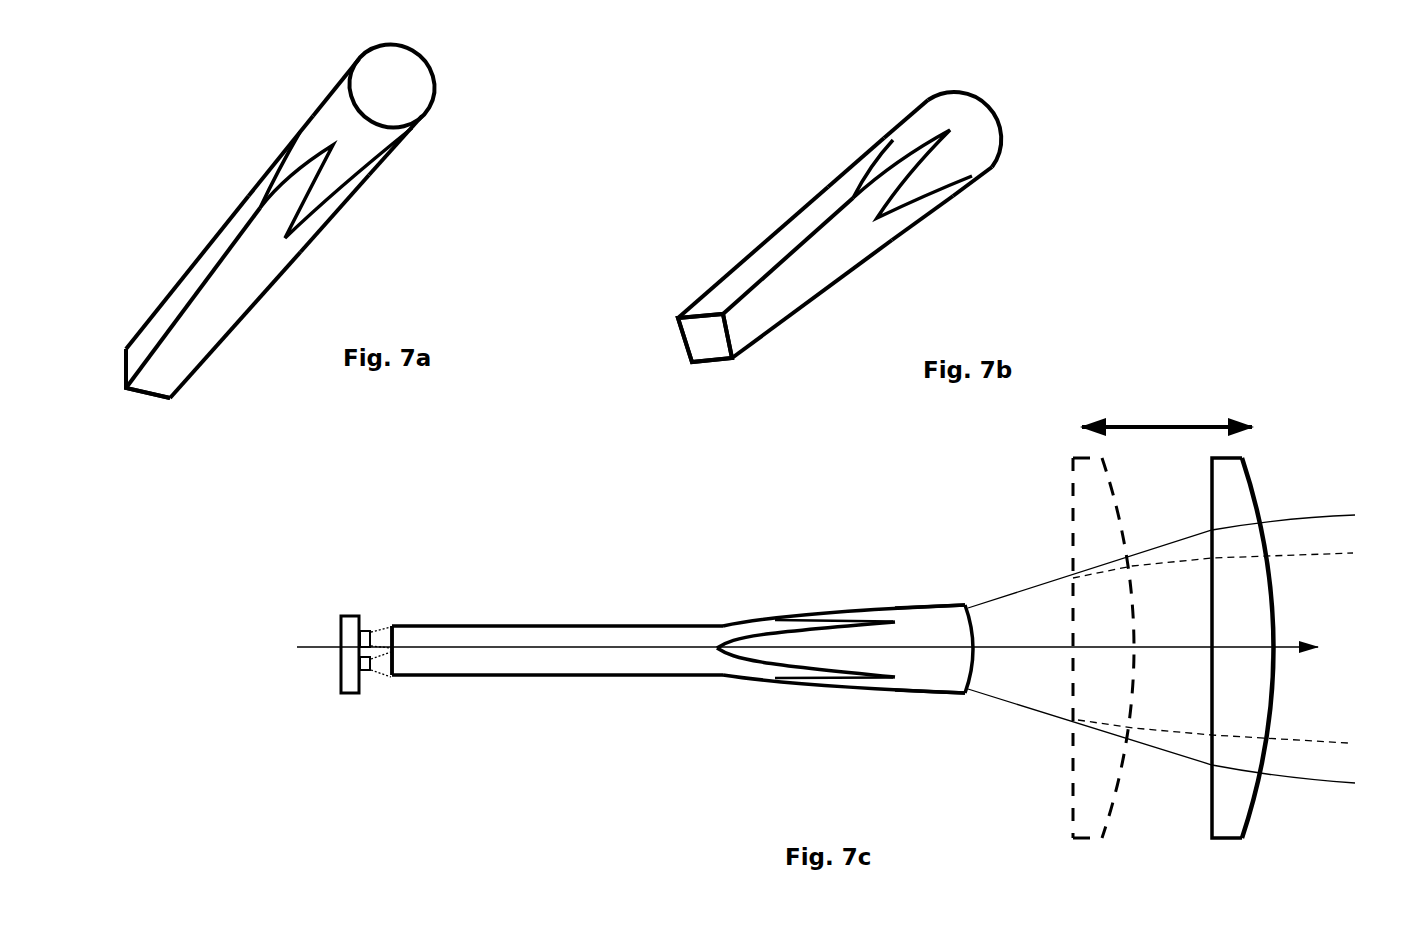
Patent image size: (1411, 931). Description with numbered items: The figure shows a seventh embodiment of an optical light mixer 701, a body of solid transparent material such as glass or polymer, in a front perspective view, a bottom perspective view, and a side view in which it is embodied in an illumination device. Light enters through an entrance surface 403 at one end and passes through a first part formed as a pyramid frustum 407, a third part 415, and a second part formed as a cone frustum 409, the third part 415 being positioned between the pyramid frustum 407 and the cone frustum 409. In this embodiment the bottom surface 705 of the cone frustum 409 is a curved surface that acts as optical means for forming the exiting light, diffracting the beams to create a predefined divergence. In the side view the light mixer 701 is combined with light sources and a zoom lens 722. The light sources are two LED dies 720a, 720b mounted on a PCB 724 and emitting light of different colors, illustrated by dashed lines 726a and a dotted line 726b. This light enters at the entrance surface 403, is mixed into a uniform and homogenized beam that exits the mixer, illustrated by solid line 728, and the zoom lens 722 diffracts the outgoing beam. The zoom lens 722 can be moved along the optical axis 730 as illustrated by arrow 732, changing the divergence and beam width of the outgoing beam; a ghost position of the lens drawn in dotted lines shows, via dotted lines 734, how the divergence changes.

In FIG. 7A, the optical light mixer 701 is at (755, 180).
In FIG. 7B, the optical light mixer 701 is at (755, 180).
In FIG. 7C, the optical light mixer 701 is at (601, 776).
In FIG. 7A, the entrance surface 403 is at (153, 402).
In FIG. 7B, the entrance surface 403 is at (702, 348).
In FIG. 7C, the entrance surface 403 is at (396, 652).
In FIG. 7A, the pyramid frustum 407 is at (206, 289).
In FIG. 7B, the pyramid frustum 407 is at (780, 264).
In FIG. 7C, the pyramid frustum 407 is at (725, 573).
In FIG. 7A, the third part 415 is at (309, 175).
In FIG. 7B, the third part 415 is at (883, 167).
In FIG. 7C, the third part 415 is at (895, 573).
In FIG. 7A, the cone frustum 409 is at (347, 101).
In FIG. 7B, the cone frustum 409 is at (921, 124).
In FIG. 7C, the cone frustum 409 is at (962, 573).
In FIG. 7A, the bottom surface of the cone frustum 705 is at (391, 86).
In FIG. 7B, the bottom surface of the cone frustum 705 is at (1005, 112).
In FIG. 7C, the bottom surface of the cone frustum 705 is at (973, 687).
In FIG. 7C, the LED die 720a is at (367, 630).
In FIG. 7C, the LED die 720b is at (367, 670).
In FIG. 7C, the PCB 724 is at (340, 665).
In FIG. 7C, the dashed lines 726a is at (387, 627).
In FIG. 7C, the dotted line 726b is at (387, 673).
In FIG. 7C, the solid line 728 is at (1042, 587).
In FIG. 7C, the optical axis 730 is at (1308, 653).
In FIG. 7C, the zoom lens 722 is at (1250, 477).
In FIG. 7C, the arrow 732 is at (1165, 422).
In FIG. 7C, the dotted lines 734 is at (1173, 733).